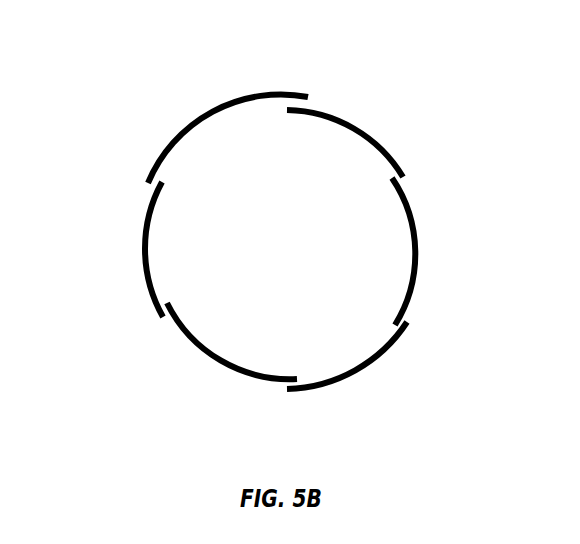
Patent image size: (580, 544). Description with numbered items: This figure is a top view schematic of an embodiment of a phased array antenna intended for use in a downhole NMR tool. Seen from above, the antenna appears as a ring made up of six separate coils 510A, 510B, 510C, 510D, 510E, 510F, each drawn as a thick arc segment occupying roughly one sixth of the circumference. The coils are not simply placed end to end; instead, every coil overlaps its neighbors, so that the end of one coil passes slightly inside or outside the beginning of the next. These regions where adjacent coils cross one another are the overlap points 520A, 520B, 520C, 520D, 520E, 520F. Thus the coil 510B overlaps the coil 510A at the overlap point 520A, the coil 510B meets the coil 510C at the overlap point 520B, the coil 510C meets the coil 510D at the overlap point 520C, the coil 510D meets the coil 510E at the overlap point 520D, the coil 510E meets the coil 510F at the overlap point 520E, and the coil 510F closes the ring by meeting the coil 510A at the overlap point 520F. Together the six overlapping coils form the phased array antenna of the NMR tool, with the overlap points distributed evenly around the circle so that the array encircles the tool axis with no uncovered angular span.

The coil 510A is at (145, 245).
The coil 510B is at (205, 112).
The coil 510C is at (357, 131).
The coil 510D is at (418, 248).
The coil 510E is at (358, 372).
The coil 510F is at (218, 365).
The overlap point 520A is at (165, 182).
The overlap point 520B is at (307, 100).
The overlap point 520C is at (407, 177).
The overlap point 520D is at (392, 328).
The overlap point 520E is at (289, 391).
The overlap point 520F is at (170, 303).